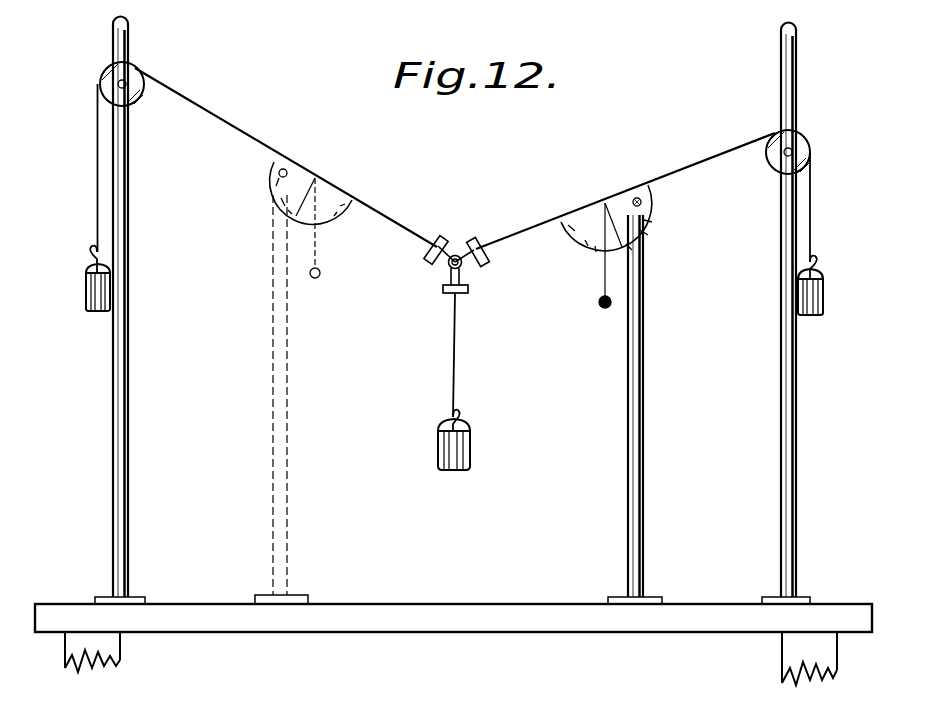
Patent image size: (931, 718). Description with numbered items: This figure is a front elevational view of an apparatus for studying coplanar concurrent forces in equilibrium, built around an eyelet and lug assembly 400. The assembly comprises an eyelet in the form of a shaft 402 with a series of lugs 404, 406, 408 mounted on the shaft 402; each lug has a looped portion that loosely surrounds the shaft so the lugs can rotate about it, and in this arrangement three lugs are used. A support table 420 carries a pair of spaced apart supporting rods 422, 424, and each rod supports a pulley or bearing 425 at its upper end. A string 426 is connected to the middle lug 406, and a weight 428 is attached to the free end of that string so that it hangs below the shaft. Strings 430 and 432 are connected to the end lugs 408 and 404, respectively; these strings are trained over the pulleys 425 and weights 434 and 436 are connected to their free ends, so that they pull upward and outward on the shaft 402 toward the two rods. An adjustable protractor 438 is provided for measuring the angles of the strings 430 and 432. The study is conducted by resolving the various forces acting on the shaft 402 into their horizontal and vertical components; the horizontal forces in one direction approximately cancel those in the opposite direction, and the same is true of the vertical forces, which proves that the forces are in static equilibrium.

The eyelet and lug assembly 400 is at (476, 230).
The shaft 402 is at (449, 269).
The lug 404 is at (452, 222).
The lug 406 is at (478, 293).
The lug 408 is at (480, 238).
The support table 420 is at (440, 621).
The supporting rod 422 is at (128, 468).
The supporting rod 424 is at (798, 455).
The pulley or bearing 425 is at (143, 75).
The string 426 is at (455, 377).
The weight 428 is at (470, 458).
The string 430 is at (548, 224).
The string 432 is at (385, 217).
The weight 434 is at (824, 302).
The weight 436 is at (95, 314).
The adjustable protractor 438 is at (332, 227).